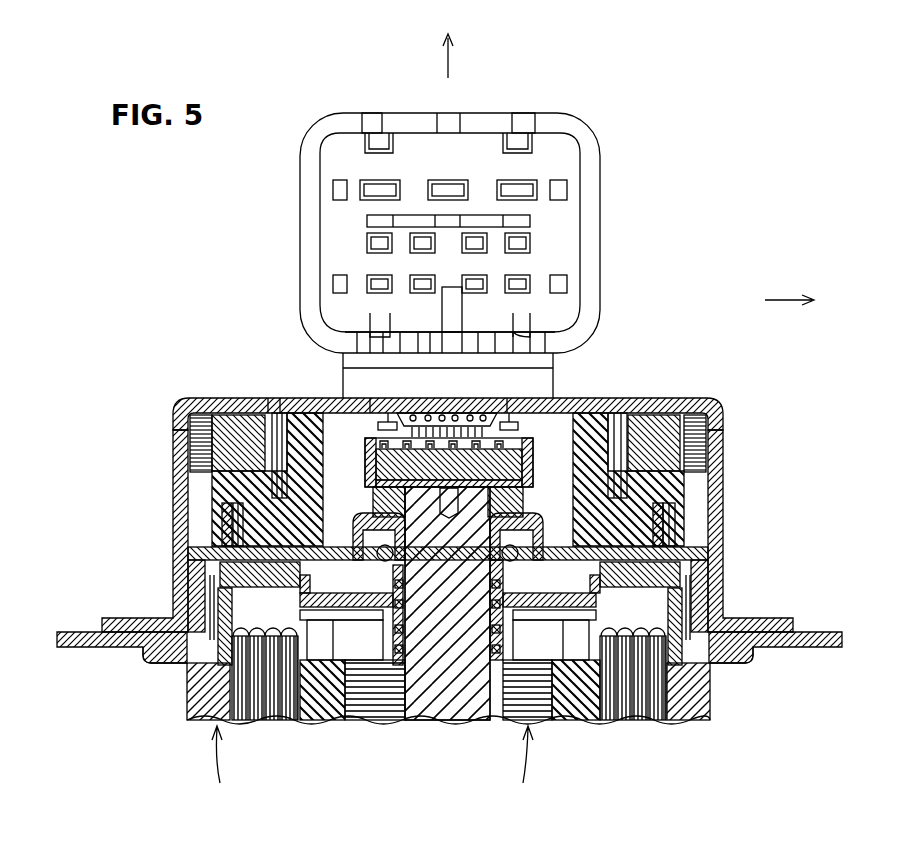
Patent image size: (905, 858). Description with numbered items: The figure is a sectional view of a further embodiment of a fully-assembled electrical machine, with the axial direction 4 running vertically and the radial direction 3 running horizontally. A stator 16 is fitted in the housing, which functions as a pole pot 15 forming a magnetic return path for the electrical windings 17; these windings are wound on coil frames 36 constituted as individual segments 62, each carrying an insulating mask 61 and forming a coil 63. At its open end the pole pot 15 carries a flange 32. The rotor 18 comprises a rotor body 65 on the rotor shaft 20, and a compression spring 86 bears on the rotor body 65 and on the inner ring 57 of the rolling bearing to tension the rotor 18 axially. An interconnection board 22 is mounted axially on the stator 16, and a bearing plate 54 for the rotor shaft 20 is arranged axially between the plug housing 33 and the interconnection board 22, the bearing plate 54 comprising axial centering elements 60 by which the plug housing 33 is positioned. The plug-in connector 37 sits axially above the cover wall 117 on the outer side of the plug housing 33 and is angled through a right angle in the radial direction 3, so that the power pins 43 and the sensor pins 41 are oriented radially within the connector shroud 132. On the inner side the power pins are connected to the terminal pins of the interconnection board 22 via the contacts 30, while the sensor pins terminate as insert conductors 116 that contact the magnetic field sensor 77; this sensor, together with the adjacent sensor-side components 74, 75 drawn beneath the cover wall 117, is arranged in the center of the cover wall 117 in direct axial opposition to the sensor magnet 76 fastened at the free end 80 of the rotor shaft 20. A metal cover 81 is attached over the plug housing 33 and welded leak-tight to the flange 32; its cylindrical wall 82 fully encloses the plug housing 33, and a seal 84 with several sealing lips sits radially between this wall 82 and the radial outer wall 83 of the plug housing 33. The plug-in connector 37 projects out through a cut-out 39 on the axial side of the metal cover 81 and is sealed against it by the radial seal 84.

The radial direction 3 is at (782, 298).
The axial direction 4 is at (446, 57).
The pole pot 15 is at (193, 705).
The stator 16 is at (220, 769).
The electrical windings 17 is at (275, 705).
The rotor 18 is at (523, 769).
The rotor shaft 20 is at (448, 634).
The interconnection board 22 is at (262, 580).
The contacts 30 is at (350, 410).
The flange 32 is at (85, 640).
The plug housing 33 is at (379, 458).
The coil frames 36 is at (659, 705).
The plug-in connector 37 is at (482, 160).
The cut-out 39 is at (233, 398).
The sensor pins 41 is at (375, 283).
The power pins 43 is at (522, 190).
The bearing plate 54 is at (700, 548).
The inner ring 57 is at (400, 562).
The axial centering elements 60 is at (678, 518).
The insulating mask 61 is at (180, 660).
The individual segments 62 is at (685, 690).
The coils 63 is at (265, 720).
The rotor body 65 is at (378, 712).
The PCB contact 74 is at (536, 378).
The electronics module 75 is at (535, 419).
The sensor magnet 76 is at (449, 462).
The magnetic field sensor 77 is at (500, 407).
The free end 80 is at (436, 503).
The metal cover 81 is at (180, 460).
The cylindrical wall 82 is at (447, 476).
The radial outer wall 83 is at (232, 462).
The seal 84 is at (190, 445).
The compression spring 86 is at (403, 618).
The insert conductors 116 is at (525, 318).
The cover wall 117 is at (275, 412).
The connector shroud 132 is at (445, 234).